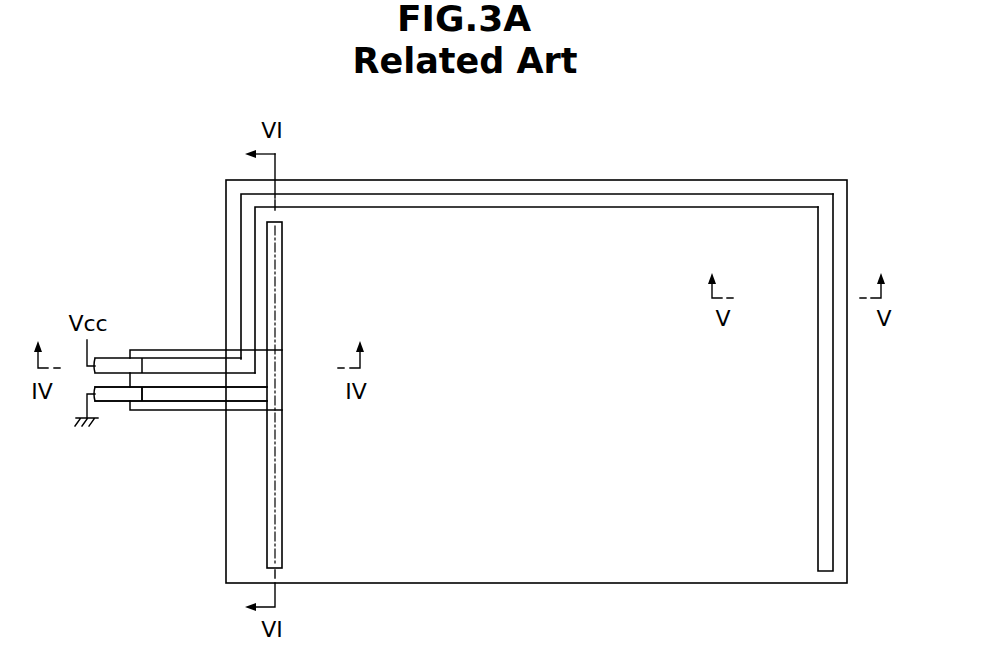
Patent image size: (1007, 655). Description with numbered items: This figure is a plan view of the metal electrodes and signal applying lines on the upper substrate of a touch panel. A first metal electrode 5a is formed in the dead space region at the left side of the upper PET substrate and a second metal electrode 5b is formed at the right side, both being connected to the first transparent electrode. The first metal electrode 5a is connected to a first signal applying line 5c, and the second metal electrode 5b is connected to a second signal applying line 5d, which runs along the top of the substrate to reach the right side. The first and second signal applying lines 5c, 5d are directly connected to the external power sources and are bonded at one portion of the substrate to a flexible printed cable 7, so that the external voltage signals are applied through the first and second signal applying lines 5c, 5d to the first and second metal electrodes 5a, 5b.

The first metal electrode 5a is at (273, 305).
The second metal electrode 5b is at (825, 440).
The first signal applying line 5c is at (242, 392).
The second signal applying line 5d is at (386, 200).
The flexible printed cable (FPC) 7 is at (167, 349).